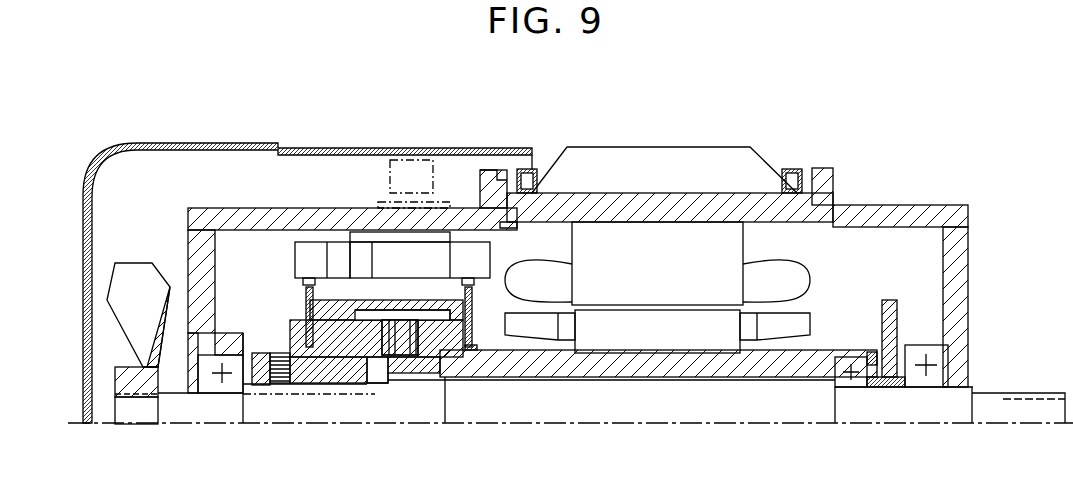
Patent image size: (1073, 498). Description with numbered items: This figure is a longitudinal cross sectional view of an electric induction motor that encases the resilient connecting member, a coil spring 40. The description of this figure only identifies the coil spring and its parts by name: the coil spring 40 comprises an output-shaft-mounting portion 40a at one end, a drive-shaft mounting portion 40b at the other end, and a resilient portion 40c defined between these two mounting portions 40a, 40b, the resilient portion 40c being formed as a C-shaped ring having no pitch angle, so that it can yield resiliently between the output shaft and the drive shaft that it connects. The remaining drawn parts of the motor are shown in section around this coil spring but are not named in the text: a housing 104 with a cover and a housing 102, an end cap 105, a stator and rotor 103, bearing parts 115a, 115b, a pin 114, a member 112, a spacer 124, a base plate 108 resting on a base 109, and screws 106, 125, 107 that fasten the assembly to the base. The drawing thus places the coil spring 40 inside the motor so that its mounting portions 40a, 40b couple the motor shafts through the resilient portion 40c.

The housing 104 is at (201, 215).
The bearing 115b is at (318, 250).
The bearing 115a is at (465, 250).
The stator core 103 is at (625, 235).
The motor housing 102 is at (713, 205).
The end cap 105 is at (888, 206).
The pin 114 is at (304, 309).
The screw 106 is at (213, 387).
The output-shaft-mounting portion 40a is at (297, 372).
The coil spring 40 is at (333, 372).
The resilient portion 40c is at (403, 347).
The spacer 124 is at (413, 382).
The drive-shaft mounting portion 40b is at (450, 350).
The plate 112 is at (472, 327).
The base 109 is at (637, 420).
The base plate 108 is at (710, 363).
The screw 125 is at (858, 380).
The screw 107 is at (918, 378).